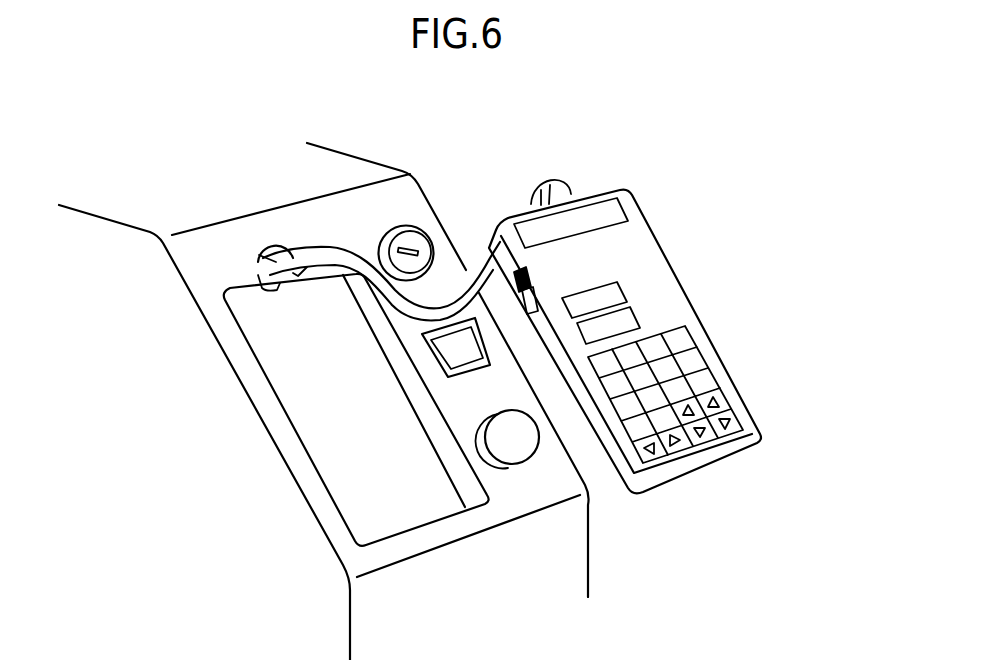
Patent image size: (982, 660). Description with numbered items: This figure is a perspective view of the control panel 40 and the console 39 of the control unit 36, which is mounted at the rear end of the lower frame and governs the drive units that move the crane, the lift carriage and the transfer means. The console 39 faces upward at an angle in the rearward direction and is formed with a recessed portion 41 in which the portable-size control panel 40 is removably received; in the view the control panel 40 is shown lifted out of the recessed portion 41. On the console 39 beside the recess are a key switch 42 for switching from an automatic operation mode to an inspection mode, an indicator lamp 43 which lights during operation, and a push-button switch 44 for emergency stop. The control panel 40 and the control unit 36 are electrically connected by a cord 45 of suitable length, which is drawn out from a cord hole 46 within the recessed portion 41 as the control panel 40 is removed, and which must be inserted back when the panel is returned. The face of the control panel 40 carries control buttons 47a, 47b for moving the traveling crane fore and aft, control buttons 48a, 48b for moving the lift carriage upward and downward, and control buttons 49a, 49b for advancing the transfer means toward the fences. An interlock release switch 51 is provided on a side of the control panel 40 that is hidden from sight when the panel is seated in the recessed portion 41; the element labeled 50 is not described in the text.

The control unit 36 is at (473, 595).
The console 39 is at (330, 218).
The control panel 40 is at (652, 300).
The recessed portion 41 is at (330, 417).
The key switch 42 is at (413, 240).
The indicator lamp 43 is at (447, 367).
The push-button switch 44 is at (523, 450).
The cord 45 is at (352, 260).
The cord hole 46 is at (277, 290).
The control button 47a is at (717, 400).
The control button 47b is at (734, 423).
The control button 48a is at (693, 397).
The control button 48b is at (722, 445).
The control button 49a is at (655, 458).
The control button 49b is at (685, 448).
The holder 50 is at (590, 415).
The interlock release switch 51 is at (519, 270).